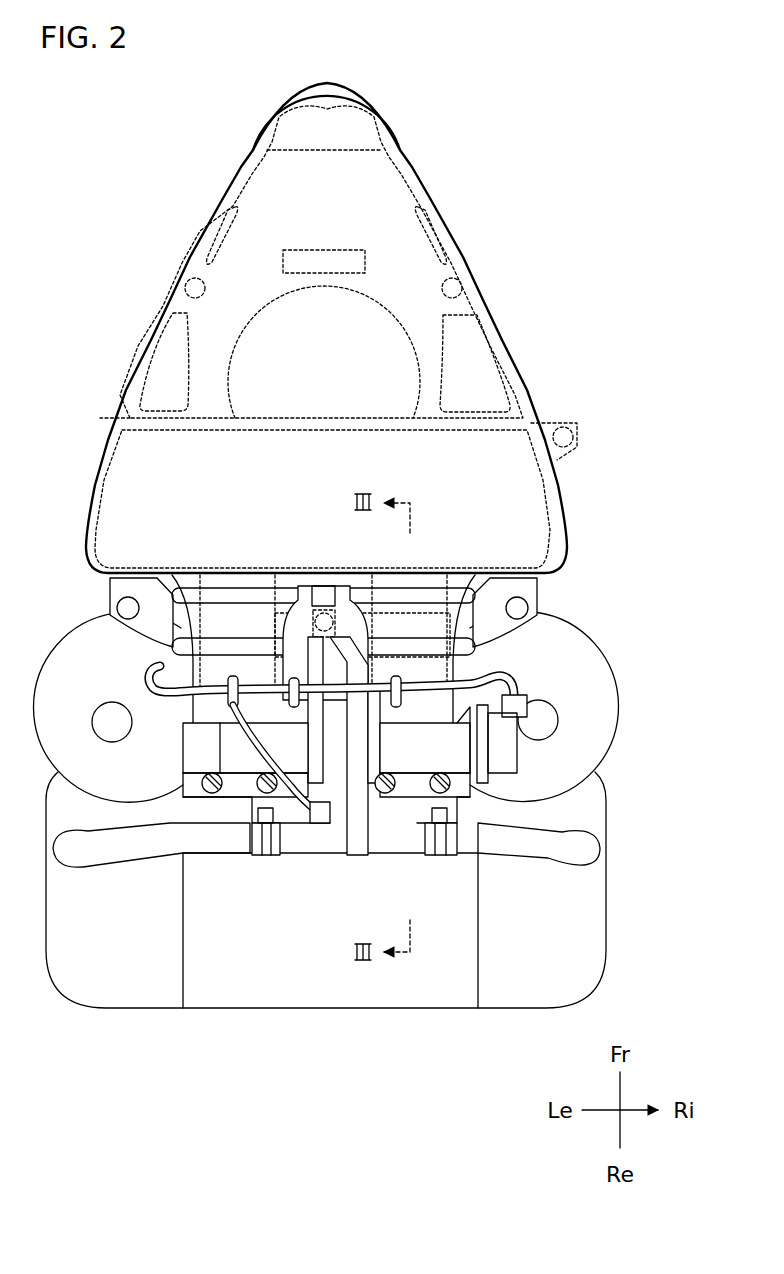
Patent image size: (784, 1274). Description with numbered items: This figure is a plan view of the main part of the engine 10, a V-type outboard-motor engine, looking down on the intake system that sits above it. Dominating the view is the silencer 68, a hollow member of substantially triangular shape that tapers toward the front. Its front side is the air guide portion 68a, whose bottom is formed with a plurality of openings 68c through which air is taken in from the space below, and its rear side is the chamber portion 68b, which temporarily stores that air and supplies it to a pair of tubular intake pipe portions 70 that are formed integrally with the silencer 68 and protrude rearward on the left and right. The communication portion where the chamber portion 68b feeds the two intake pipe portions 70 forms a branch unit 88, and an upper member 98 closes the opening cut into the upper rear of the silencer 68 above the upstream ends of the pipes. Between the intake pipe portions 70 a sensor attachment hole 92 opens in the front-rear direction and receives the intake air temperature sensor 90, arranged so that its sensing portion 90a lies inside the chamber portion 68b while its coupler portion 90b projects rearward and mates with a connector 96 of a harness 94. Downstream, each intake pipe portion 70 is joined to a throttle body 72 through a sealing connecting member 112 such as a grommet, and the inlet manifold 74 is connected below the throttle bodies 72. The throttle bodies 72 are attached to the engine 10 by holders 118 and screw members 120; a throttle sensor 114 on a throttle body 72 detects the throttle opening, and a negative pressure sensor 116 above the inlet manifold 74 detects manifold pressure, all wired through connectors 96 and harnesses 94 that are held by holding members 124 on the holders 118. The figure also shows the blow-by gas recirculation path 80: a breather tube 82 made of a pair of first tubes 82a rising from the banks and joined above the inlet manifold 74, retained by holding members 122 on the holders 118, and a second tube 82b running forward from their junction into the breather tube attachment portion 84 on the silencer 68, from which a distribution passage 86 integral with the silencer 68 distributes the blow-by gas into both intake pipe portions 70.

The engine 10 is at (588, 486).
The silencer 68 is at (462, 253).
The air guide portion 68a is at (375, 185).
The chamber portion 68b is at (503, 453).
The openings 68c is at (264, 286).
The intake pipe portions 70 is at (178, 578).
The throttle bodies 72 is at (203, 738).
The inlet manifold 74 is at (320, 988).
The blow-by gas recirculation path 80 is at (215, 862).
The breather tube 82 is at (326, 884).
The first tubes 82a is at (102, 858).
The second tube 82b is at (357, 800).
The breather tube attachment portion 84 is at (337, 622).
The distribution passage 86 is at (267, 587).
The branch unit 88 is at (437, 570).
The intake air temperature sensor 90 is at (362, 546).
The sensing portion 90a is at (322, 585).
The coupler portion 90b is at (338, 588).
The sensor attachment hole 92 is at (310, 564).
The harness 94 is at (513, 677).
The connector 96 is at (283, 628).
The upper member 98 is at (218, 582).
The connecting members 112 is at (208, 672).
The throttle sensor 114 is at (507, 740).
The negative pressure sensor 116 is at (331, 795).
The holders 118 is at (232, 753).
The screw members 120 is at (208, 790).
The holding members 122 is at (262, 857).
The holding members 124 is at (395, 688).